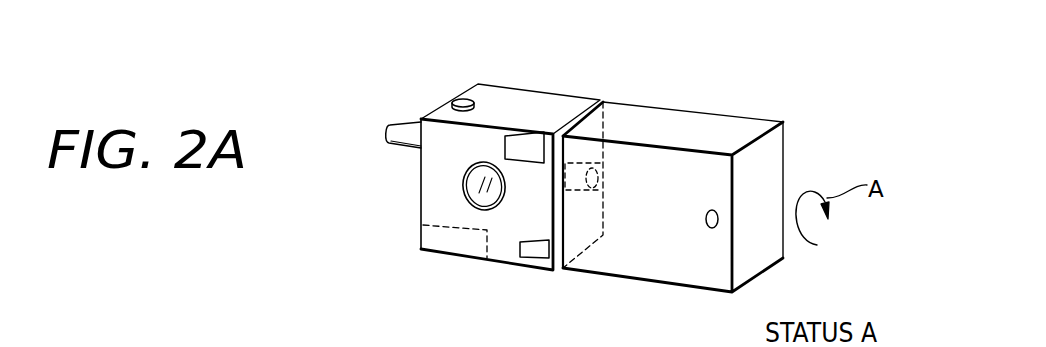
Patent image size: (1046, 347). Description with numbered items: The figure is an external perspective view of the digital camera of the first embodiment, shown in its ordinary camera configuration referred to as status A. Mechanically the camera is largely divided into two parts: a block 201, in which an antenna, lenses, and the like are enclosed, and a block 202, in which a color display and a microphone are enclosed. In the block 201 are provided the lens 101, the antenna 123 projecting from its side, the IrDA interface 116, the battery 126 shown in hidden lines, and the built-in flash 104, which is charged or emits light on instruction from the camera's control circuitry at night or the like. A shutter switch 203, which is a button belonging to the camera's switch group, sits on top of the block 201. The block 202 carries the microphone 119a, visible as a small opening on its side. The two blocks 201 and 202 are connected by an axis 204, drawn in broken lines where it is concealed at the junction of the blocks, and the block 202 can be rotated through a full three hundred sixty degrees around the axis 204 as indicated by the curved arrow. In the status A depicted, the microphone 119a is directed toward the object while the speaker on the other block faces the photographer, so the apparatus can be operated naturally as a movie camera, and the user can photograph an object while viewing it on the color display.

The lens 101 is at (468, 182).
The built-in flash 104 is at (530, 143).
The IrDA interface 116 is at (528, 247).
The microphone 119a is at (718, 218).
The antenna 123 is at (396, 122).
The battery 126 is at (430, 238).
The block 201 is at (540, 100).
The block 202 is at (722, 123).
The shutter switch 203 is at (467, 100).
The axis 204 is at (588, 164).